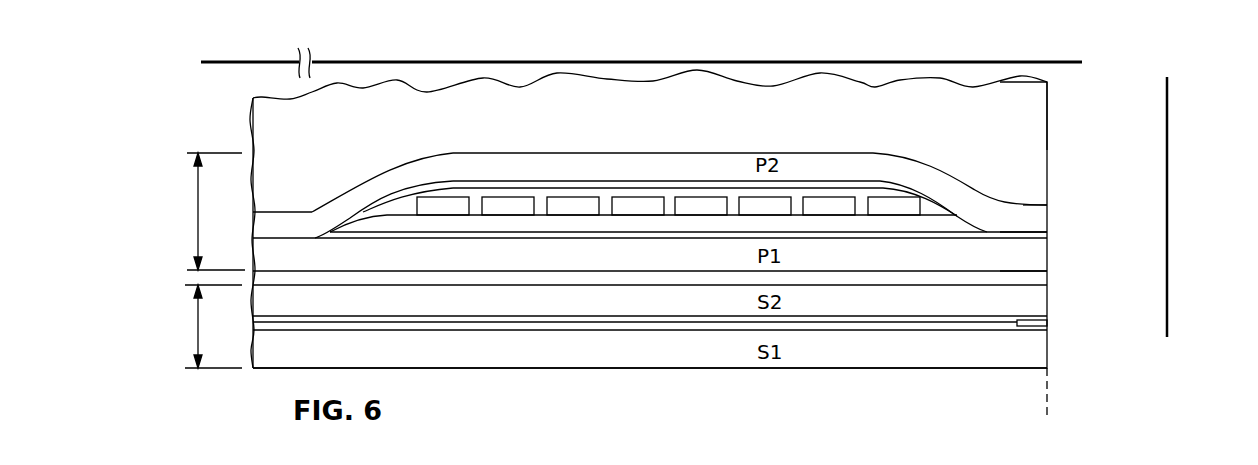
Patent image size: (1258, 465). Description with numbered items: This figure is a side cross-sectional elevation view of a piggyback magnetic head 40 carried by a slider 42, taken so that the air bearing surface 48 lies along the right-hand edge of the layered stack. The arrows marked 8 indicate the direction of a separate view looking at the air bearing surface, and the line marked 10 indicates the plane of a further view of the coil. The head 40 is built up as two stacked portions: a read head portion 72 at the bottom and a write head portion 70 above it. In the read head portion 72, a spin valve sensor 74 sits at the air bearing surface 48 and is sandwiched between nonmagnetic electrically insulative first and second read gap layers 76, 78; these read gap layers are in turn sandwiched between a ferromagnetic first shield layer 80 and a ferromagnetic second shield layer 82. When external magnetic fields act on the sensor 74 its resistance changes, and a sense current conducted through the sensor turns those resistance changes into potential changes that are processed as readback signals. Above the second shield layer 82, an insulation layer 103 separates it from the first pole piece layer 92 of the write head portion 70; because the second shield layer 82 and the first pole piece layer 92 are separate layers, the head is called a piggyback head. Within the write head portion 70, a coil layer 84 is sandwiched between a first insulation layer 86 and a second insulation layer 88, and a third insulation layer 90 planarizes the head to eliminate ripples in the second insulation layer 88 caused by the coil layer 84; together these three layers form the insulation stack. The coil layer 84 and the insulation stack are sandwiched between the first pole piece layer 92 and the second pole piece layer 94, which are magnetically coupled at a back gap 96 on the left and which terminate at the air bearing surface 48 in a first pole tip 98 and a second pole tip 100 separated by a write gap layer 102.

The view direction arrows 8 is at (1180, 83).
The section line 10 is at (209, 18).
The magnetic head 40 is at (232, 106).
The slider 42 is at (1032, 112).
The air bearing surface 48 is at (1047, 420).
The write head portion 70 is at (198, 217).
The read head portion 72 is at (198, 331).
The spin valve sensor 74 is at (1047, 323).
The first read gap layer 76 is at (717, 330).
The second read gap layer 78 is at (685, 316).
The first shield layer 80 is at (820, 353).
The second shield layer 82 is at (922, 303).
The coil layer 84 is at (698, 203).
The first insulation layer 86 is at (610, 227).
The second insulation layer 88 is at (937, 208).
The third insulation layer 90 is at (480, 183).
The first pole piece layer 92 is at (968, 258).
The second pole piece layer 94 is at (833, 163).
The back gap 96 is at (293, 238).
The first pole tip 98 is at (1047, 258).
The second pole tip 100 is at (1042, 215).
The write gap layer 102 is at (1047, 235).
The insulation layer 103 is at (877, 278).